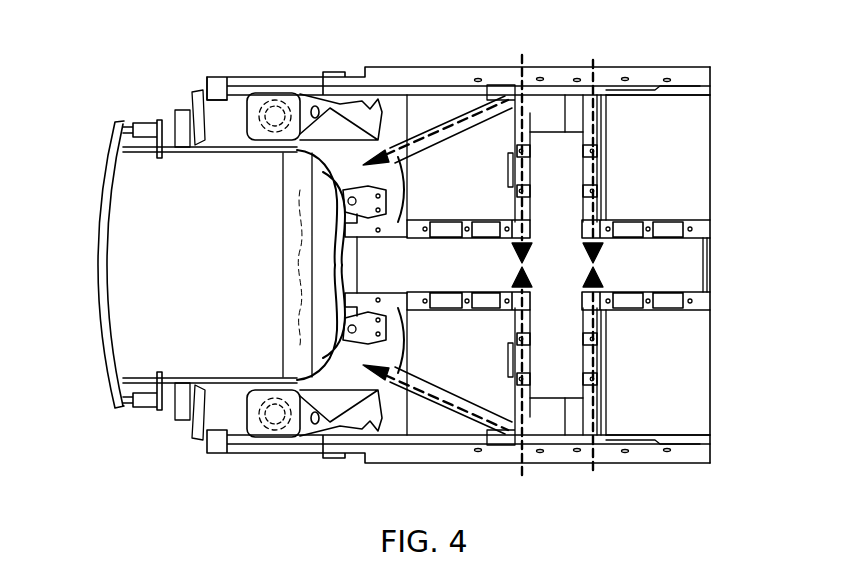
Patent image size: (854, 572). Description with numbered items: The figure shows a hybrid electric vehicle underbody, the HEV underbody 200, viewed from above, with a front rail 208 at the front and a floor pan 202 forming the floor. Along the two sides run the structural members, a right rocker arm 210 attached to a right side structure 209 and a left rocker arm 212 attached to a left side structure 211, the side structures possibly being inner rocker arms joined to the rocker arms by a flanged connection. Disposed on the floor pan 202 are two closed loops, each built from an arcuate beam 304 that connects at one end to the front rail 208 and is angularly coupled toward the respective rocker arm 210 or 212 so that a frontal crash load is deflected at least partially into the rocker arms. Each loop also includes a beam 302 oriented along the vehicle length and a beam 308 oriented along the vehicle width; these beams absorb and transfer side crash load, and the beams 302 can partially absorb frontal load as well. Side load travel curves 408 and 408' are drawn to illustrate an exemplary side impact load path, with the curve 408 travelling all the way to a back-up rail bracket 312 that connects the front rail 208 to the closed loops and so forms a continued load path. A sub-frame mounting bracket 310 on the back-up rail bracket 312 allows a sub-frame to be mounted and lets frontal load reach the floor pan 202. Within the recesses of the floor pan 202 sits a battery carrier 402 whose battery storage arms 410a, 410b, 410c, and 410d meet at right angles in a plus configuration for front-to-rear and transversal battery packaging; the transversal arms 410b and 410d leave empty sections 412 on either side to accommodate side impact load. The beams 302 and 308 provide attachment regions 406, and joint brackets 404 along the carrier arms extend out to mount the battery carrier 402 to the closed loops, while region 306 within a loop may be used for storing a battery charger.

The HEV underbody 200 is at (282, 72).
The floor pan 202 is at (710, 375).
The front rail 208 is at (220, 152).
The right side structure 209 is at (620, 97).
The right rocker arm 210 is at (685, 67).
The left side structure 211 is at (618, 435).
The left rocker arm 212 is at (645, 463).
The beam 302 is at (418, 222).
The arcuate beam 304 is at (437, 120).
The floor panel 306 is at (442, 175).
The beam 308 is at (530, 180).
The sub-frame mounting bracket 310 is at (353, 195).
The back-up rail bracket 312 is at (338, 208).
The battery carrier 402 is at (712, 248).
The joint brackets 404 is at (610, 220).
The attachment regions 406 is at (597, 137).
The side load travel curve 408 is at (510, 239).
The side load travel curve 408' is at (608, 244).
The battery storage arm 410a is at (357, 270).
The battery storage arm 410b is at (560, 398).
The battery storage arm 410c is at (708, 268).
The battery storage arm 410d is at (548, 132).
The empty sections 412 is at (565, 112).